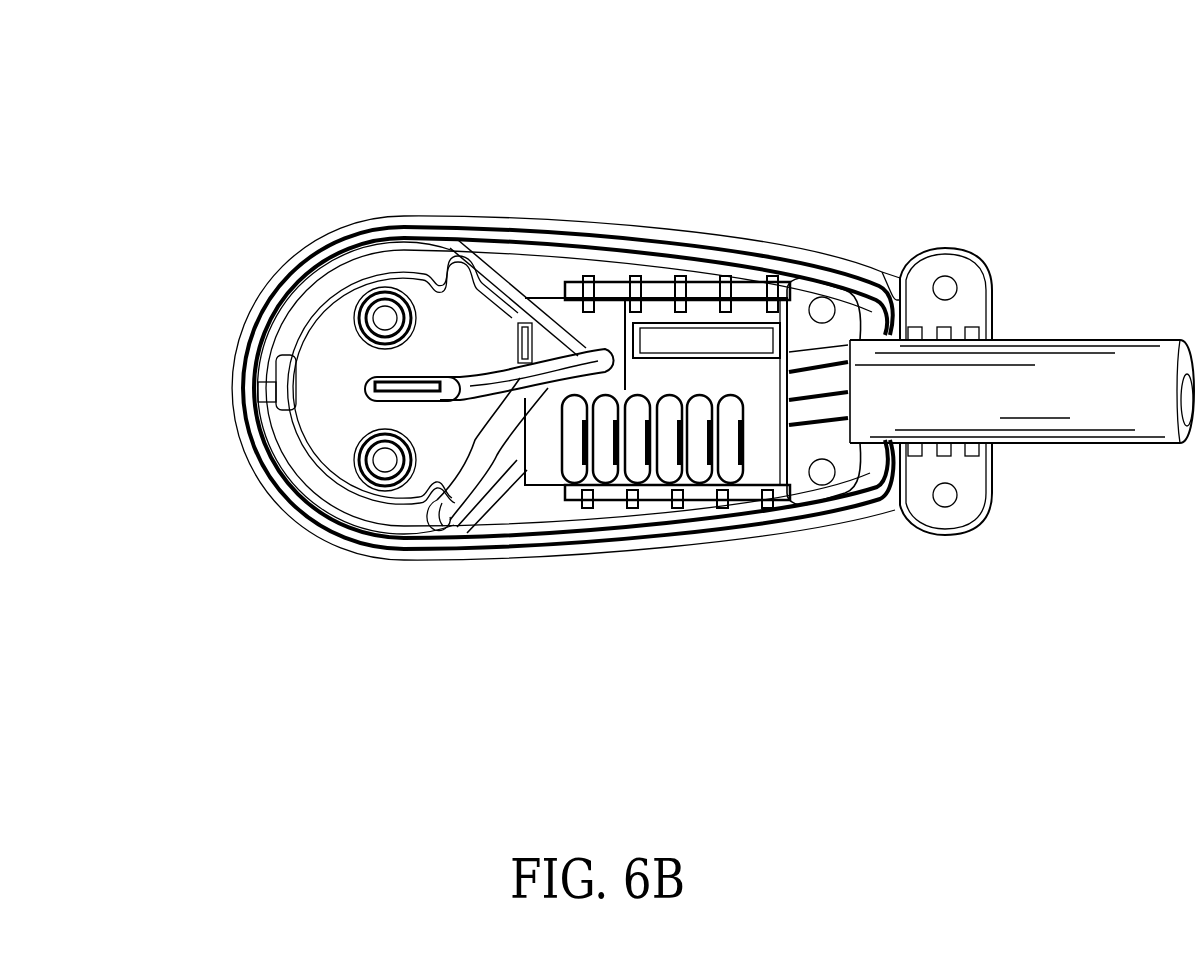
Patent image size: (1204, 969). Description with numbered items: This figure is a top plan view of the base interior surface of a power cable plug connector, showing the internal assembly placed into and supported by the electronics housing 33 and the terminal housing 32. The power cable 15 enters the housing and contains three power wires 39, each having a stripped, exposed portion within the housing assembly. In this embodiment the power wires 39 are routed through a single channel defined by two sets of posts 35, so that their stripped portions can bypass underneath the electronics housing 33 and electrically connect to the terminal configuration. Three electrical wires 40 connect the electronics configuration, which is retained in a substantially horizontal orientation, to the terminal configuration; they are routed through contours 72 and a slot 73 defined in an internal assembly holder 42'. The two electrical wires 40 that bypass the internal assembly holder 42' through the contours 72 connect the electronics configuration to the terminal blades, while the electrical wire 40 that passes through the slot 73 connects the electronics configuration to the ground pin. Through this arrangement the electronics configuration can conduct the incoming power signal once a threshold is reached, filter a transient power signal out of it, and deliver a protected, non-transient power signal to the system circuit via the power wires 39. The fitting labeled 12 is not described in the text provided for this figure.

The terminal housing 32 is at (302, 218).
The electronics housing 33 is at (600, 221).
The internal assembly holder 42' is at (388, 282).
The electrical wires 40 is at (478, 276).
The slot 73 is at (367, 395).
The contours 72 is at (430, 500).
The posts 35 is at (632, 500).
The power wire 39 is at (803, 505).
The connector bracket 12 is at (793, 222).
The power cable 15 is at (1100, 365).